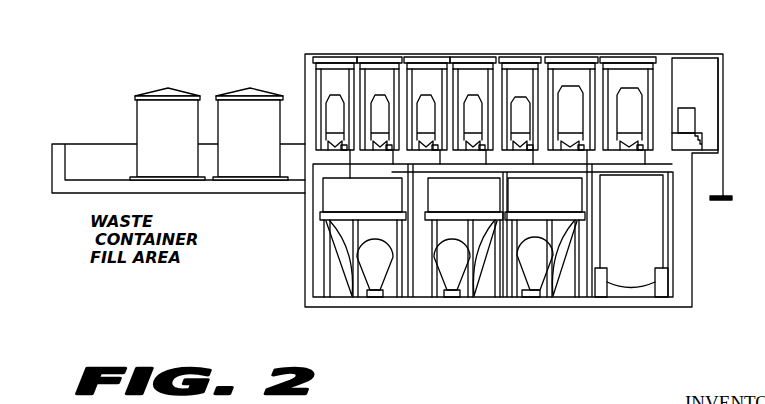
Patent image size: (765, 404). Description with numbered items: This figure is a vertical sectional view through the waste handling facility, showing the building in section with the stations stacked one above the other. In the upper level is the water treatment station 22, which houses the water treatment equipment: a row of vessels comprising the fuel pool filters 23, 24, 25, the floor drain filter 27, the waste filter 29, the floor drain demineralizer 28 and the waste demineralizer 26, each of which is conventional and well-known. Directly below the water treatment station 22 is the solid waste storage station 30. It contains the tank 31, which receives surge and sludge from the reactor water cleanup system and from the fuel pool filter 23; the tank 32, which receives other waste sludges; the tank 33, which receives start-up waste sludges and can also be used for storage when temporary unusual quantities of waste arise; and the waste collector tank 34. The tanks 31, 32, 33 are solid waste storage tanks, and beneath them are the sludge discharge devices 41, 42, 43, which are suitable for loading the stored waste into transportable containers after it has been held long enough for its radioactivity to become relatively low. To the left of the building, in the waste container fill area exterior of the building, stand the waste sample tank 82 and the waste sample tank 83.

The water treatment station 22 is at (327, 76).
The fuel pool filter 23 is at (335, 95).
The fuel pool filter 24 is at (380, 96).
The fuel pool filter 25 is at (427, 96).
The waste demineralizer 26 is at (630, 88).
The floor drain filter 27 is at (474, 96).
The floor drain demineralizer 28 is at (570, 86).
The waste filter 29 is at (520, 97).
The solid waste storage station 30 is at (696, 297).
The tank 31 is at (379, 209).
The tank 32 is at (477, 211).
The tank 33 is at (558, 207).
The waste collector tank 34 is at (647, 225).
The sludge discharge device 41 is at (372, 298).
The sludge discharge device 42 is at (452, 299).
The sludge discharge device 43 is at (527, 297).
The waste sample tank 82 is at (262, 146).
The waste sample tank 83 is at (177, 146).